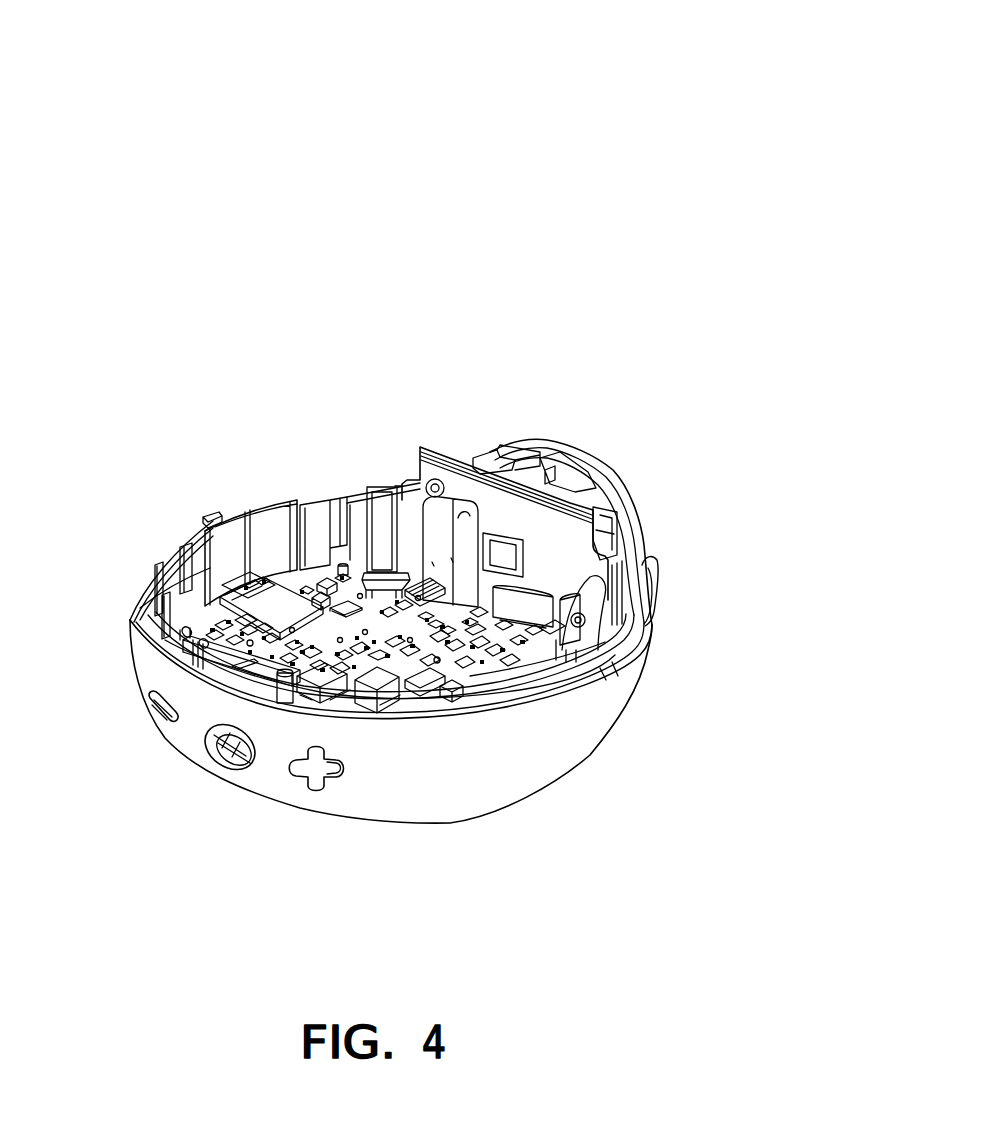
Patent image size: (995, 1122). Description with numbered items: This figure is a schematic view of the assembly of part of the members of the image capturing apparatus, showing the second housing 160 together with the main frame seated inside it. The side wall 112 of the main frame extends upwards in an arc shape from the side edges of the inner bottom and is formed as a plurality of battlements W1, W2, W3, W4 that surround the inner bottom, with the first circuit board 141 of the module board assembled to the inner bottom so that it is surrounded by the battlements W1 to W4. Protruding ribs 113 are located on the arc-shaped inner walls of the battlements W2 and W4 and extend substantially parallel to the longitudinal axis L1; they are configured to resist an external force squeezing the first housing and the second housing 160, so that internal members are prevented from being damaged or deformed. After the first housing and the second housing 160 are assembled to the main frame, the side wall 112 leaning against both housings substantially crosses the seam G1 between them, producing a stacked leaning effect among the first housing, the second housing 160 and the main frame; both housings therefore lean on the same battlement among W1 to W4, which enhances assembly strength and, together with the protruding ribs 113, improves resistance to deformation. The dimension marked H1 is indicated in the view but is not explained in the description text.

The side wall 112 is at (768, 14).
The protruding ribs 113 is at (188, 548).
The first circuit board 141 is at (352, 588).
The second housing 160 is at (400, 805).
The battlement W1 is at (478, 460).
The battlement W2 is at (270, 508).
The battlement W3 is at (220, 663).
The battlement W4 is at (546, 677).
The seam G1 is at (600, 675).
The height H1 is at (668, 442).
The longitudinal axis L1 is at (385, 245).